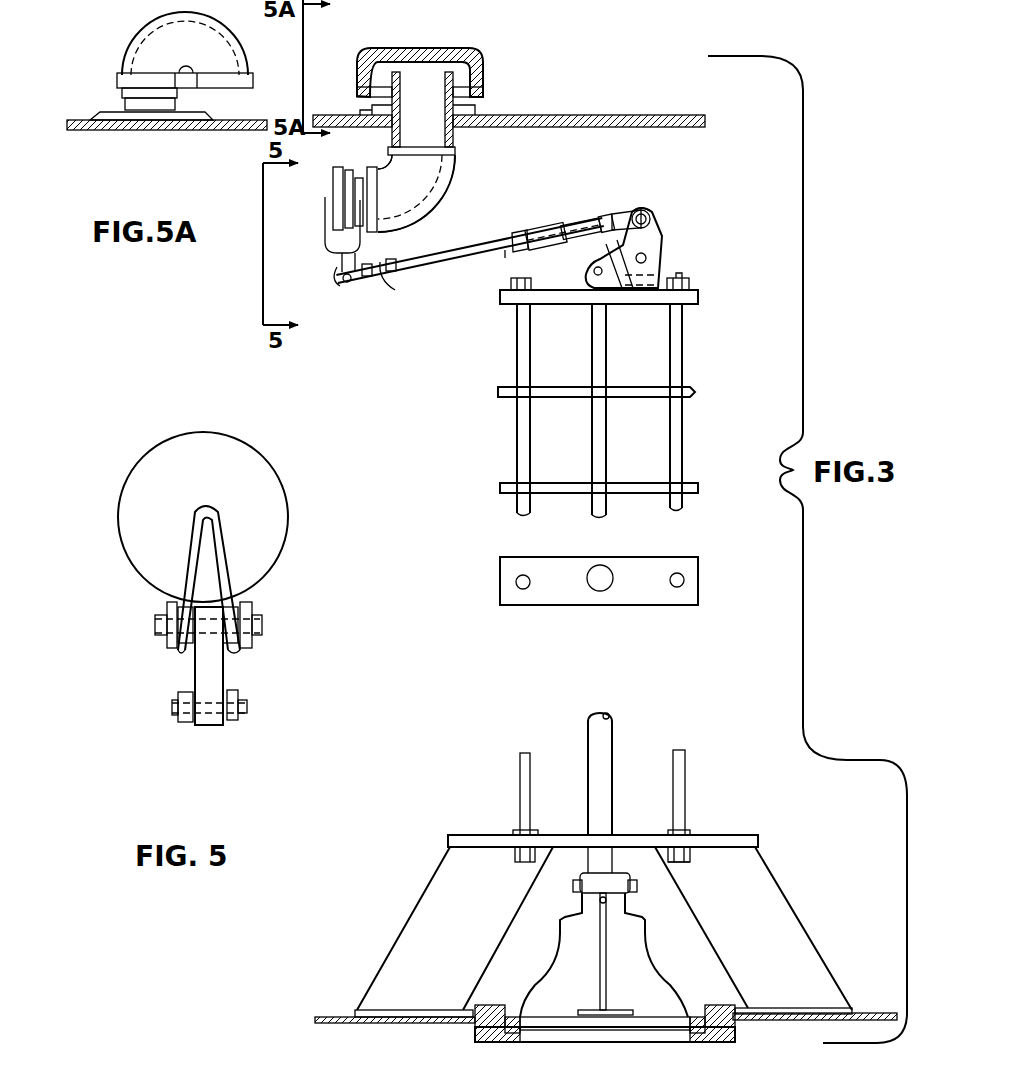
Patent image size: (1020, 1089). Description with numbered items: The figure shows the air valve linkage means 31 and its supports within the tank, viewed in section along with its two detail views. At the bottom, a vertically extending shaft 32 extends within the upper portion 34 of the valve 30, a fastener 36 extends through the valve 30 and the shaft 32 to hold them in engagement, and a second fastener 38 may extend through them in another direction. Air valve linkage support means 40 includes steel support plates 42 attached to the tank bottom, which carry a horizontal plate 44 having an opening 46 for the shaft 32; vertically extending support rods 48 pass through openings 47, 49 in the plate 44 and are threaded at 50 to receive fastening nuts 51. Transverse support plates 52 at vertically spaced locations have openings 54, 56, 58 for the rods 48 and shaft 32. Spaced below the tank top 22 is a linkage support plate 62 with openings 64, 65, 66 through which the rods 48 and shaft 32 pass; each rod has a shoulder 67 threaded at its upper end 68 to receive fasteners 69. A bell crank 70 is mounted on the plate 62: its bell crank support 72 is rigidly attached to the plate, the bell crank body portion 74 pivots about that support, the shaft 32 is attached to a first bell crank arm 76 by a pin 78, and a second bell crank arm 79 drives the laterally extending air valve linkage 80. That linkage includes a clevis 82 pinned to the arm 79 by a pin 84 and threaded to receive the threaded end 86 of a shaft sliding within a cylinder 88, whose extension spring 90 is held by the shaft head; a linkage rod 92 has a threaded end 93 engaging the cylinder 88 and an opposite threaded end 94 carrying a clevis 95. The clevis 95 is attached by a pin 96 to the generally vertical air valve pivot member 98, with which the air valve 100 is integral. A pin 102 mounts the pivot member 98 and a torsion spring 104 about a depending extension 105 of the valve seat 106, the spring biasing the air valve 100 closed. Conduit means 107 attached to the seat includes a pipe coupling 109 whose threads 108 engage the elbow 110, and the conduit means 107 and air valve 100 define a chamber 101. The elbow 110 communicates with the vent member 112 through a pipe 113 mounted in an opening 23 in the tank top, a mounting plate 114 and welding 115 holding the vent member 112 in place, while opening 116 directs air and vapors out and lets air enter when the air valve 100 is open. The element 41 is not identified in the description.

In FIG. 5A, the tank top 22 is at (147, 123).
In FIG. 3, the tank top 22 is at (640, 115).
In FIG. 3, the opening 23 is at (453, 130).
In FIG. 3, the valve 30 is at (533, 1000).
In FIG. 3, the air valve linkage means 31 is at (625, 718).
In FIG. 3, the shaft 32 is at (602, 770).
In FIG. 3, the upper portion 34 is at (628, 925).
In FIG. 3, the fastener 36 is at (577, 883).
In FIG. 3, the second fastener 38 is at (600, 902).
In FIG. 3, the air valve linkage support means 40 is at (787, 875).
In FIG. 3, the rod end 41 is at (506, 252).
In FIG. 3, the steel support plates 42 is at (788, 953).
In FIG. 3, the horizontal plate 44 is at (750, 836).
In FIG. 3, the opening 46 is at (615, 833).
In FIG. 3, the opening 47 is at (690, 830).
In FIG. 3, the support rods 48 is at (523, 787).
In FIG. 3, the opening 49 is at (515, 832).
In FIG. 3, the threads 50 is at (675, 860).
In FIG. 3, the fastening nuts 51 is at (690, 852).
In FIG. 3, the transverse support plates 52 is at (690, 480).
In FIG. 3, the opening 54 is at (682, 584).
In FIG. 3, the opening 56 is at (608, 590).
In FIG. 3, the opening 58 is at (527, 588).
In FIG. 3, the linkage support plate 62 is at (510, 300).
In FIG. 3, the opening 64 is at (680, 292).
In FIG. 3, the opening 65 is at (511, 285).
In FIG. 3, the opening 66 is at (593, 298).
In FIG. 3, the shoulder 67 is at (685, 308).
In FIG. 3, the upper end 68 is at (673, 278).
In FIG. 3, the fasteners 69 is at (680, 282).
In FIG. 3, the bell crank 70 is at (665, 243).
In FIG. 3, the bell crank support 72 is at (648, 273).
In FIG. 3, the bell crank body portion 74 is at (648, 240).
In FIG. 3, the first bell crank arm 76 is at (618, 270).
In FIG. 3, the pin 78 is at (594, 272).
In FIG. 3, the second bell crank arm 79 is at (648, 238).
In FIG. 3, the air valve linkage 80 is at (490, 210).
In FIG. 3, the clevis 82 is at (627, 207).
In FIG. 3, the pin 84 is at (640, 210).
In FIG. 3, the threaded end 86 is at (607, 220).
In FIG. 3, the cylinder 88 is at (560, 220).
In FIG. 3, the extension spring 90 is at (557, 227).
In FIG. 3, the linkage rod 92 is at (428, 256).
In FIG. 3, the threaded end 93 is at (520, 235).
In FIG. 3, the threaded end 94 is at (383, 292).
In FIG. 3, the clevis 95 is at (345, 283).
In FIG. 5, the clevis 95 is at (178, 720).
In FIG. 5, the pin 96 is at (245, 705).
In FIG. 3, the air valve pivot member 98 is at (333, 250).
In FIG. 5, the air valve pivot member 98 is at (210, 683).
In FIG. 5, the air valve 100 is at (192, 450).
In FIG. 3, the chamber 101 is at (417, 207).
In FIG. 5, the pin 102 is at (158, 623).
In FIG. 5, the torsion spring 104 is at (190, 540).
In FIG. 5, the depending extension 105 is at (257, 642).
In FIG. 3, the valve seat 106 is at (350, 168).
In FIG. 3, the conduit means 107 is at (433, 205).
In FIG. 3, the threads 108 is at (362, 173).
In FIG. 3, the pipe coupling 109 is at (393, 272).
In FIG. 3, the elbow 110 is at (418, 195).
In FIG. 5A, the vent member 112 is at (150, 42).
In FIG. 3, the vent member 112 is at (463, 52).
In FIG. 3, the pipe 113 is at (430, 110).
In FIG. 5A, the mounting plate 114 is at (125, 107).
In FIG. 3, the mounting plate 114 is at (370, 107).
In FIG. 3, the welding 115 is at (360, 113).
In FIG. 5A, the opening 116 is at (220, 80).
In FIG. 3, the opening 116 is at (462, 90).